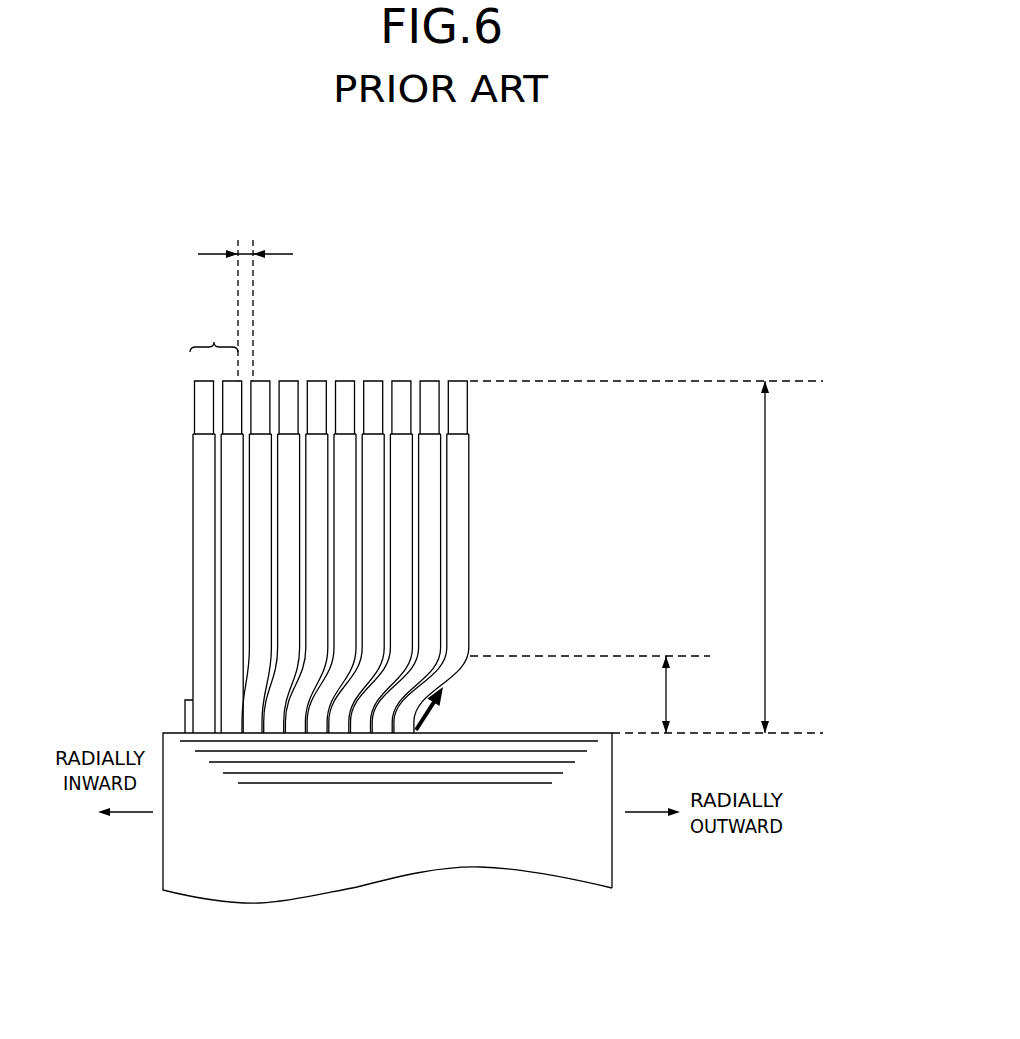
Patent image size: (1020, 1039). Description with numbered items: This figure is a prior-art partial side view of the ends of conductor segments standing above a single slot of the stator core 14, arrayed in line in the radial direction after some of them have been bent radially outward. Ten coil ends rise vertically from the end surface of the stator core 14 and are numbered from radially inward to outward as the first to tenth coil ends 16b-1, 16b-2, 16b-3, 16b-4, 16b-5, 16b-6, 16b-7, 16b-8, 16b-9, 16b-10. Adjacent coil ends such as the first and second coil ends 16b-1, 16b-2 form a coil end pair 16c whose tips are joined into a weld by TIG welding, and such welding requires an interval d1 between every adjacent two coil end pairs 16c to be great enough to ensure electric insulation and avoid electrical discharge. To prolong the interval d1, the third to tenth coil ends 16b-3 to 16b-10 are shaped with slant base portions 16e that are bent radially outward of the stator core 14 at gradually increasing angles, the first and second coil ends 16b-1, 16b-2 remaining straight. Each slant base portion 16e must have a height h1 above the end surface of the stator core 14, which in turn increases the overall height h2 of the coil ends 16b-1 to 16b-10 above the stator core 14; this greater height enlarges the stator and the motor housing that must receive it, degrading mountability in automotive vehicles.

The stator core 14 is at (434, 860).
The first coil end 16b-1 is at (202, 500).
The second coil end 16b-2 is at (234, 381).
The third coil end 16b-3 is at (260, 381).
The fourth coil end 16b-4 is at (289, 381).
The fifth coil end 16b-5 is at (317, 381).
The sixth coil end 16b-6 is at (345, 381).
The seventh coil end 16b-7 is at (373, 381).
The eighth coil end 16b-8 is at (401, 381).
The ninth coil end 16b-9 is at (430, 381).
The tenth coil end 16b-10 is at (460, 478).
The coil end pair 16c is at (214, 334).
The slant base portion 16e is at (443, 700).
The interval d1 is at (245, 294).
The height of slant base portion h1 is at (590, 694).
The overall height of coil ends h2 is at (646, 557).